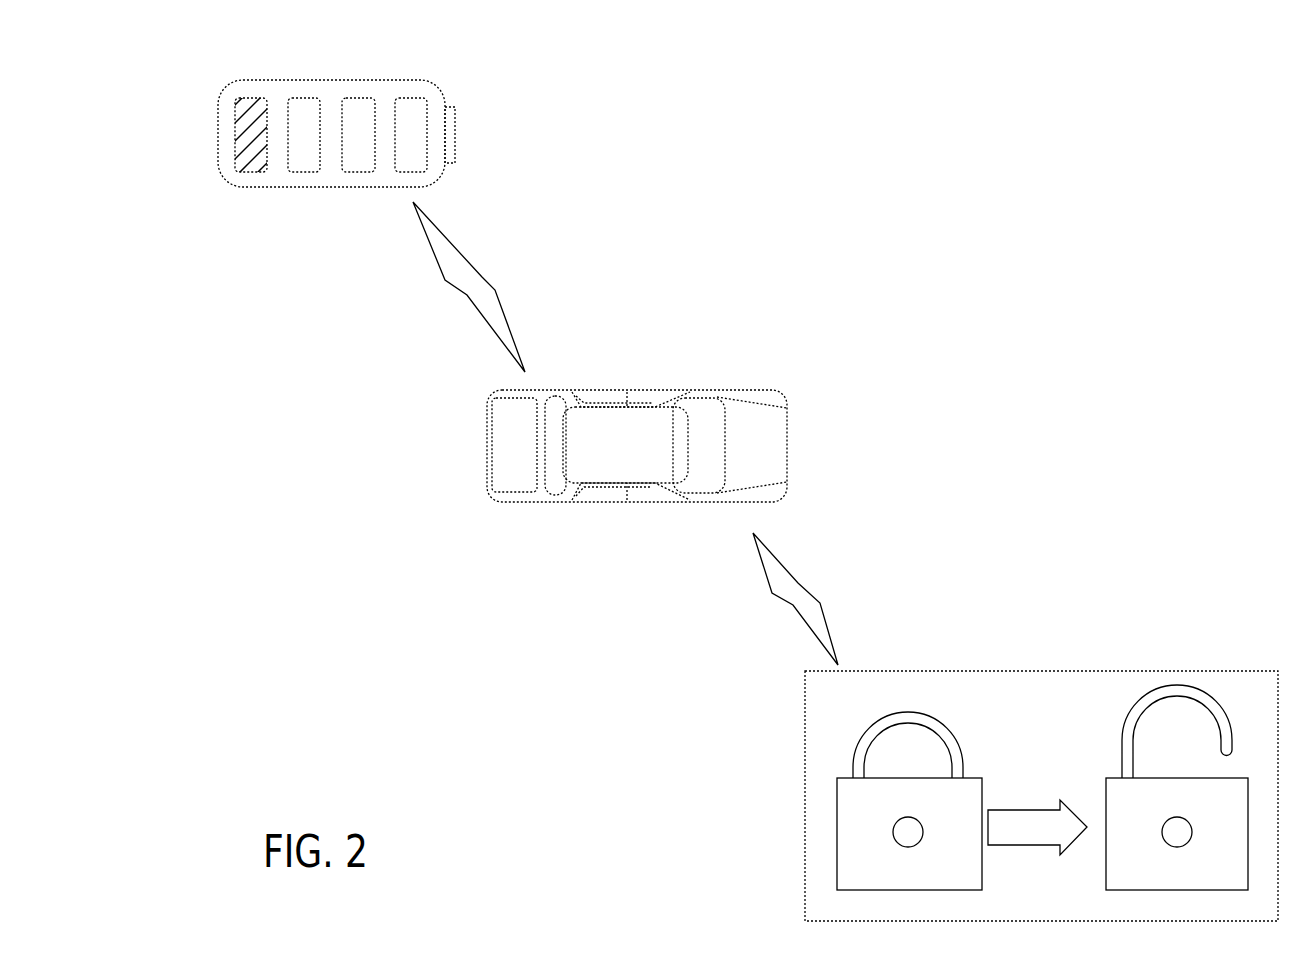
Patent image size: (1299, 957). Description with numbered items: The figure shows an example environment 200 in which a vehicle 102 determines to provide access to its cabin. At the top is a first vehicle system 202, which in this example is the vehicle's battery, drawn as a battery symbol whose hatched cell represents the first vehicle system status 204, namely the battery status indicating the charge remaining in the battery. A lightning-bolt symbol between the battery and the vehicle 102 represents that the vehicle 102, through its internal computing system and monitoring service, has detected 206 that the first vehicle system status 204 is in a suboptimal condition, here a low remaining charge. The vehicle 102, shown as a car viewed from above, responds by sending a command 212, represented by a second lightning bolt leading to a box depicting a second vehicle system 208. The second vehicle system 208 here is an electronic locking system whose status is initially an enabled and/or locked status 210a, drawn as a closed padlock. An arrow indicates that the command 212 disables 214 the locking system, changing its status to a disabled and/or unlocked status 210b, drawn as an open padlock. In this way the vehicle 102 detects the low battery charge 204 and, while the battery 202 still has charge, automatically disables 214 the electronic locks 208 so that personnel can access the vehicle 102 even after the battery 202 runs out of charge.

The environment 200 is at (143, 22).
The first vehicle system 202 is at (445, 100).
The first vehicle system status 204 is at (257, 170).
The detection 206 is at (482, 278).
The vehicle 102 is at (639, 458).
The command 212 is at (798, 577).
The second vehicle system 208 is at (805, 778).
The enabled and/or locked status 210a is at (907, 712).
The disabling 214 is at (1027, 808).
The disabled and/or unlocked status 210b is at (1172, 683).